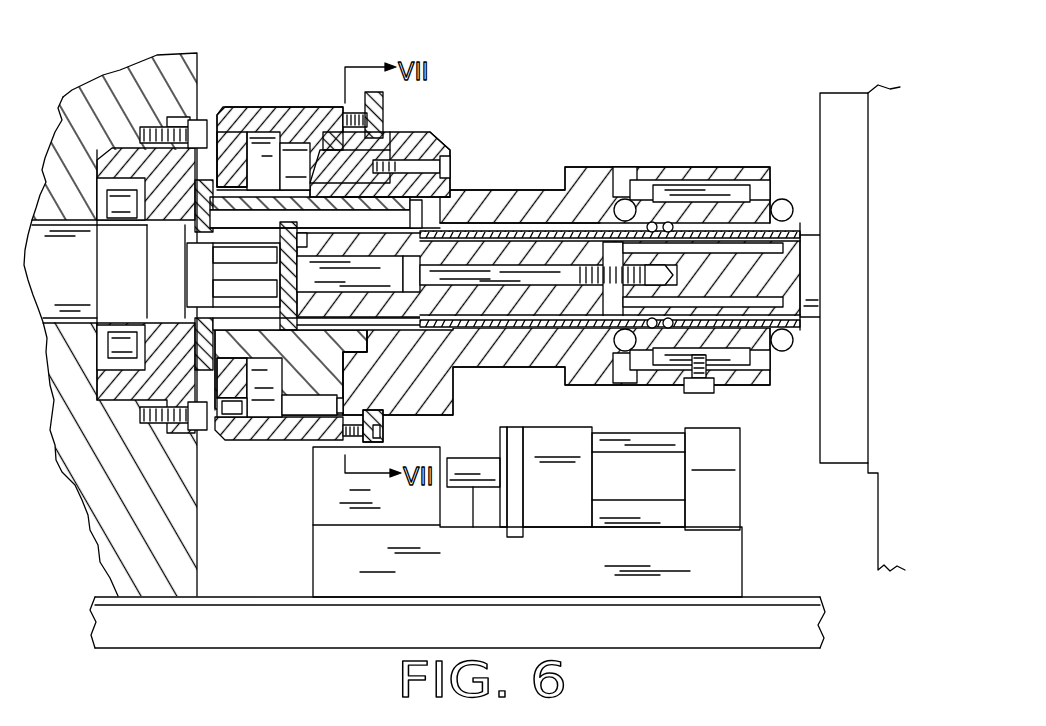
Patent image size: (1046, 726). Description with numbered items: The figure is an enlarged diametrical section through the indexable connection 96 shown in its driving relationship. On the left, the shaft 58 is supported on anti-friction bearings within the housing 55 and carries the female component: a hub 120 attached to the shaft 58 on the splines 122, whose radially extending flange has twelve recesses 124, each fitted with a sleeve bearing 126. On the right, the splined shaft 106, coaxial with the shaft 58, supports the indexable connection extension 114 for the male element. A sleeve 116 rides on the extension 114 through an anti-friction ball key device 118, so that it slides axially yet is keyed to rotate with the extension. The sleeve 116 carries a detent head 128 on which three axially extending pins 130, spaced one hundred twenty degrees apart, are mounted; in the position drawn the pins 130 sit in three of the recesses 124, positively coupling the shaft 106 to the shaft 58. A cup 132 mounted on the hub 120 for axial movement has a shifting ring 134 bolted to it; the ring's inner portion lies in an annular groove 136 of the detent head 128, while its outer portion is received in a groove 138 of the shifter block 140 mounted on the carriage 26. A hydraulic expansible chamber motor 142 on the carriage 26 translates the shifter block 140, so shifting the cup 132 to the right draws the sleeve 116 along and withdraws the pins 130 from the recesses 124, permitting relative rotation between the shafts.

The carriage 26 is at (705, 644).
The housing 55 is at (122, 548).
The shaft 58 is at (118, 282).
The indexable connection 96 is at (472, 383).
The shaft 106 is at (790, 275).
The indexable connection extension 114 is at (573, 243).
The sleeve 116 is at (527, 192).
The anti-friction ball key device 118 is at (737, 190).
The hub 120 is at (297, 390).
The splines 122 is at (233, 268).
The recesses 124 is at (335, 132).
The sleeve bearing 126 is at (313, 150).
The detent head 128 is at (443, 148).
The pins 130 is at (441, 128).
The cup 132 is at (233, 432).
The shifting ring 134 is at (384, 95).
The annular groove 136 is at (383, 413).
The groove 138 is at (388, 457).
The shifter block 140 is at (310, 480).
The hydraulic expansible chamber motor 142 is at (655, 492).